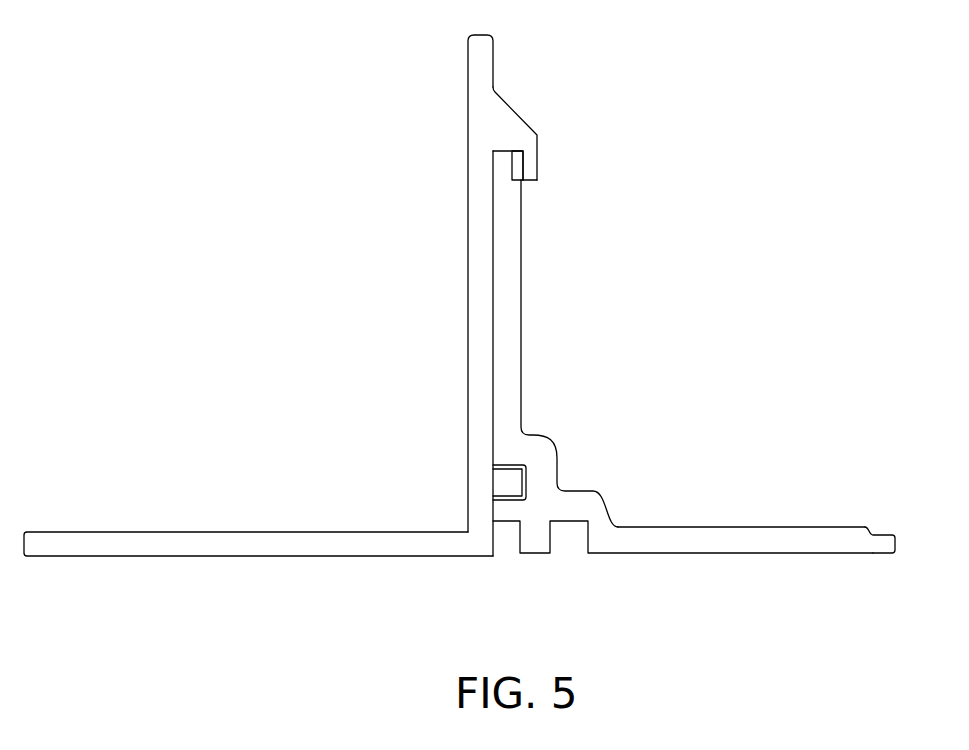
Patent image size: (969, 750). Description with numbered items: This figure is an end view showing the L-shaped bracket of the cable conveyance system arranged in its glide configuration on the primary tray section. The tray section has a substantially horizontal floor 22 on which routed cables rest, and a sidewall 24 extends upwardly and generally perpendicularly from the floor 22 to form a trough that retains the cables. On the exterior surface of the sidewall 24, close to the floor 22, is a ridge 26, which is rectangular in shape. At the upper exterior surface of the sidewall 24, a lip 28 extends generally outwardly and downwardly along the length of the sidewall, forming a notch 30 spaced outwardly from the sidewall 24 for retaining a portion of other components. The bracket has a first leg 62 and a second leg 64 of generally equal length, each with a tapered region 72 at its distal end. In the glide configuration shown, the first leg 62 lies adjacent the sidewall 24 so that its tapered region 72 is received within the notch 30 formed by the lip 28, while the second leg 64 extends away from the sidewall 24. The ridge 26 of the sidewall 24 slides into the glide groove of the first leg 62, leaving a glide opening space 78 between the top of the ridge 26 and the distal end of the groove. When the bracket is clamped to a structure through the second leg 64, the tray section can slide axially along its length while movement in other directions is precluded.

The floor 22 is at (232, 541).
The sidewall 24 is at (482, 204).
The ridge 26 is at (510, 483).
The lip 28 is at (507, 115).
The notch 30 is at (513, 168).
The first leg 62 is at (515, 289).
The second leg 64 is at (797, 541).
The tapered region 72 is at (505, 164).
The glide opening space 78 is at (508, 464).